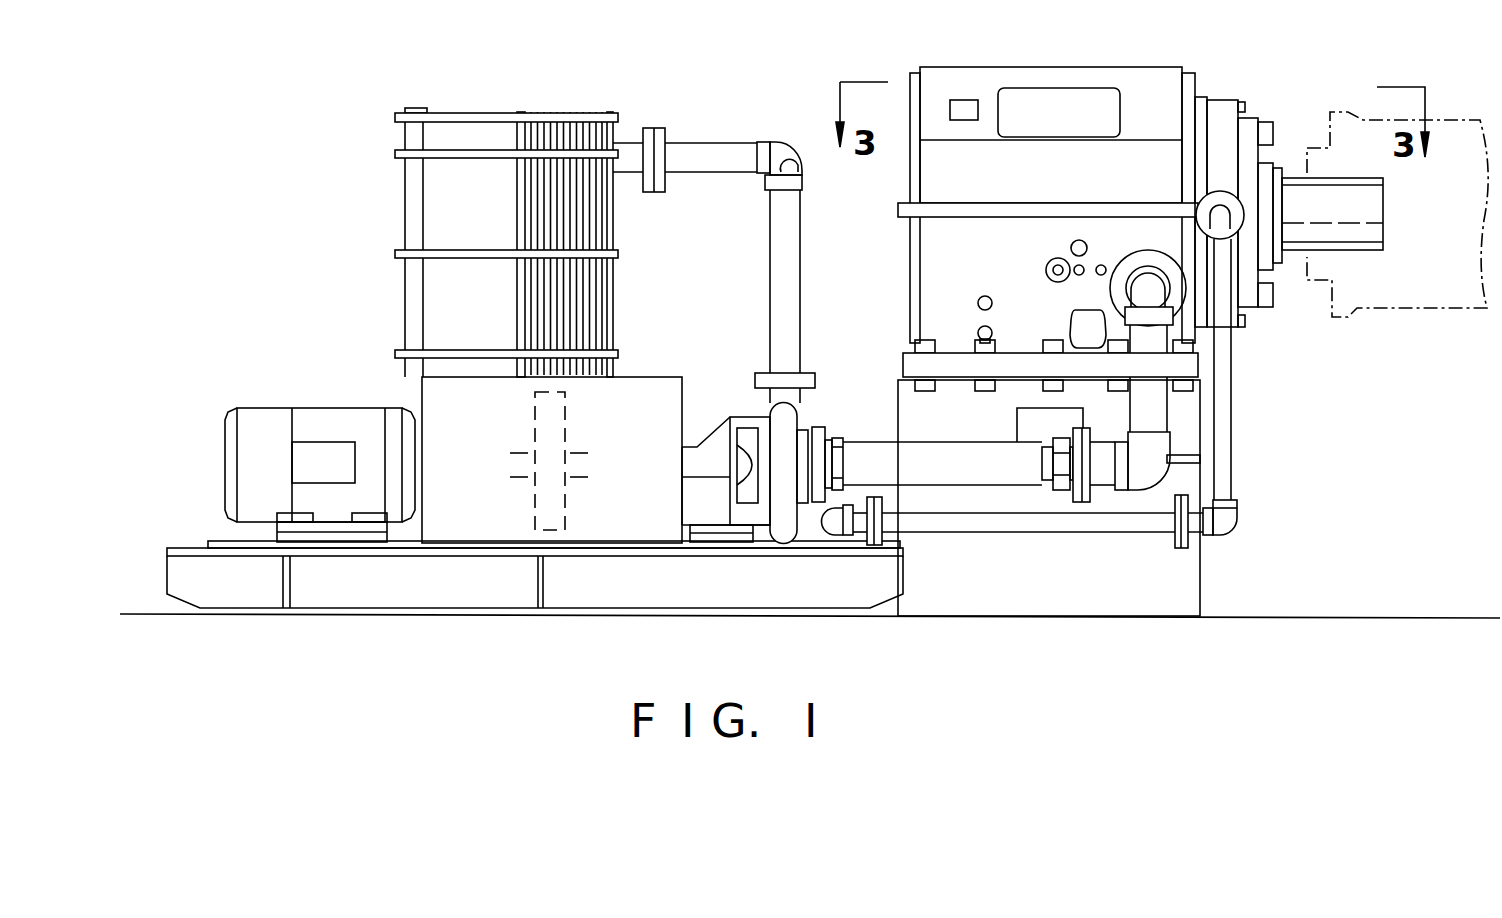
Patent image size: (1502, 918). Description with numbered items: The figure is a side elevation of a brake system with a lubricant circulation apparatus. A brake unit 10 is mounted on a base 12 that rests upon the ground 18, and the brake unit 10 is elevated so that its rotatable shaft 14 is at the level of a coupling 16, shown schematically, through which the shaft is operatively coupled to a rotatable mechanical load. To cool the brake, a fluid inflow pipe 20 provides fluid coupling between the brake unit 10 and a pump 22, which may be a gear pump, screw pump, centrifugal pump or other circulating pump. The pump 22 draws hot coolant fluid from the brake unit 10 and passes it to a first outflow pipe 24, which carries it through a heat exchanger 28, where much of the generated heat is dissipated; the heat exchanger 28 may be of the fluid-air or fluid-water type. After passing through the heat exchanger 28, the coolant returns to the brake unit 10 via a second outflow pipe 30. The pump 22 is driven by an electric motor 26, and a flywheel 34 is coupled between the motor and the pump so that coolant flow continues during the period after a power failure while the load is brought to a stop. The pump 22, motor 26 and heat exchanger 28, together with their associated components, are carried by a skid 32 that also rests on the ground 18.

The brake unit 10 is at (1112, 66).
The base 12 is at (1200, 580).
The rotatable shaft 14 is at (1290, 268).
The coupling 16 is at (1395, 308).
The ground 18 is at (1396, 617).
The fluid inflow pipe 20 is at (862, 442).
The pump 22 is at (785, 523).
The first outflow pipe 24 is at (712, 143).
The electric motor 26 is at (255, 408).
The heat exchanger 28 is at (505, 108).
The second outflow pipe 30 is at (1233, 484).
The skid 32 is at (168, 573).
The flywheel 34 is at (533, 518).